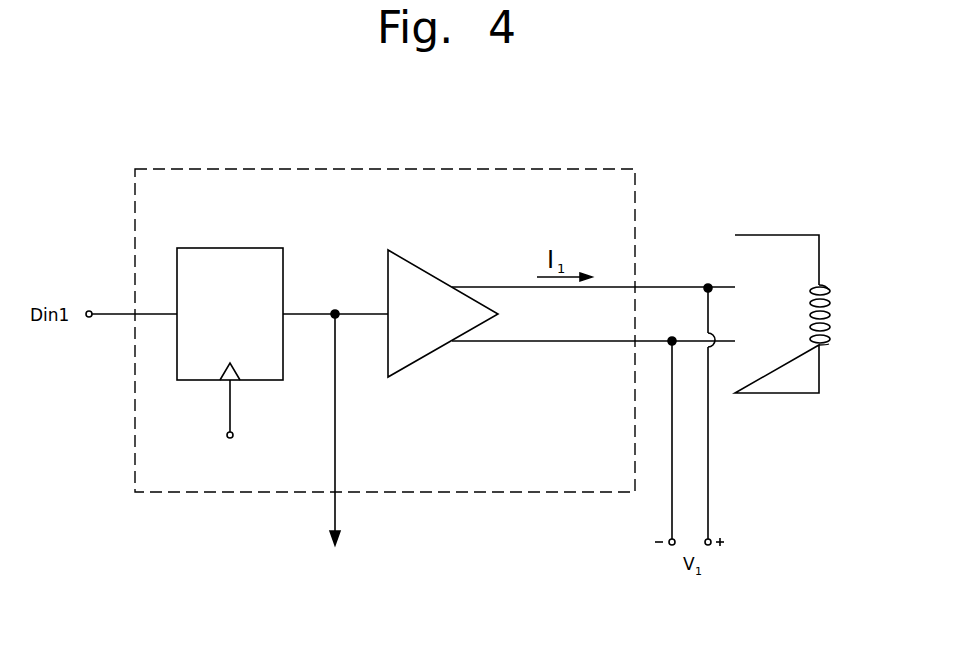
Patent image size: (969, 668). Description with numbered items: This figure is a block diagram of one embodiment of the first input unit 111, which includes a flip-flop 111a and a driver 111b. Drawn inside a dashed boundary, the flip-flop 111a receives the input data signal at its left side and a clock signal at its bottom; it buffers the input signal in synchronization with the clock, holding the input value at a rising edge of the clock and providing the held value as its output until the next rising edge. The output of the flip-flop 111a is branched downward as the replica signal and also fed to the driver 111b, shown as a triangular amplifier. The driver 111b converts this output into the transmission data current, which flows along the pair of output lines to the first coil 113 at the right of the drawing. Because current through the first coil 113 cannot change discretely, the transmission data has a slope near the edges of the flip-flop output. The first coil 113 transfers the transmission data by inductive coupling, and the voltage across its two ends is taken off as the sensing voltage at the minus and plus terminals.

The first input unit 111 is at (570, 169).
The flip-flop 111a is at (235, 248).
The driver 111b is at (422, 268).
The first coil 113 is at (827, 286).